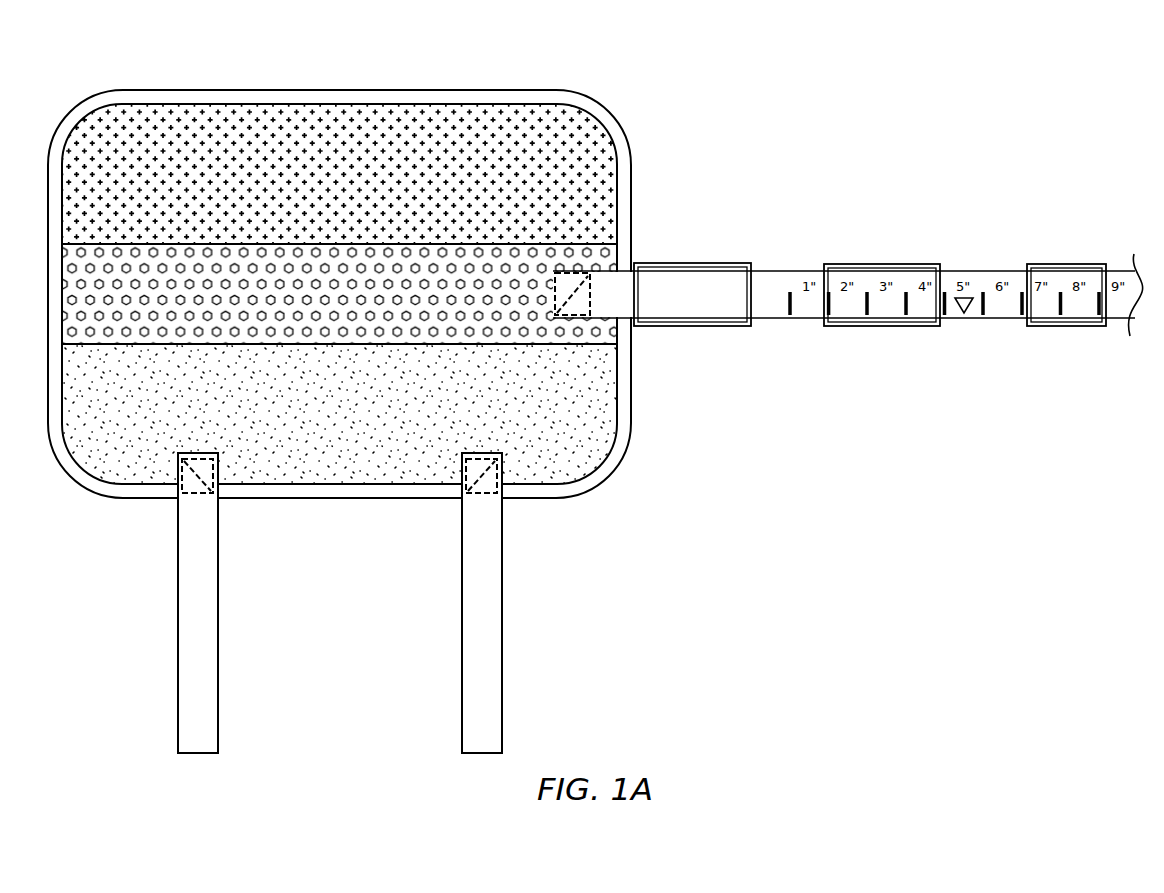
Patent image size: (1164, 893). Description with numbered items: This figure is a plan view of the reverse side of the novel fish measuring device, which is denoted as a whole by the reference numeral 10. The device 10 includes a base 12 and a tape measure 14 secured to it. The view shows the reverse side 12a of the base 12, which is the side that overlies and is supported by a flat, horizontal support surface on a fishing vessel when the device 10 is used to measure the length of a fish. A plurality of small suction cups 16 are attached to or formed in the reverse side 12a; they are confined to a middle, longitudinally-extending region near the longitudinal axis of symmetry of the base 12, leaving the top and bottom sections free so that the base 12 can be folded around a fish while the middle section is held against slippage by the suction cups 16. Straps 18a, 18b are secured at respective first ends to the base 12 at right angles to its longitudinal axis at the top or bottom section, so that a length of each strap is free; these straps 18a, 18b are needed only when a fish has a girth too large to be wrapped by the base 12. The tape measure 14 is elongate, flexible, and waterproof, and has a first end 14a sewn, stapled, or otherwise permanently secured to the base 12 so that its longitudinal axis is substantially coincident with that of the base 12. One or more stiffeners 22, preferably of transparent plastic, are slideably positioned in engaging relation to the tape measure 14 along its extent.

The fish measuring device 10 is at (803, 158).
The base 12 is at (306, 500).
The reverse side 12a is at (383, 122).
The suction cups 16 is at (588, 250).
The first end 14a is at (590, 290).
The tape measure 14 is at (965, 320).
The stiffeners 22 is at (690, 327).
The strap 18a is at (218, 614).
The strap 18b is at (502, 614).